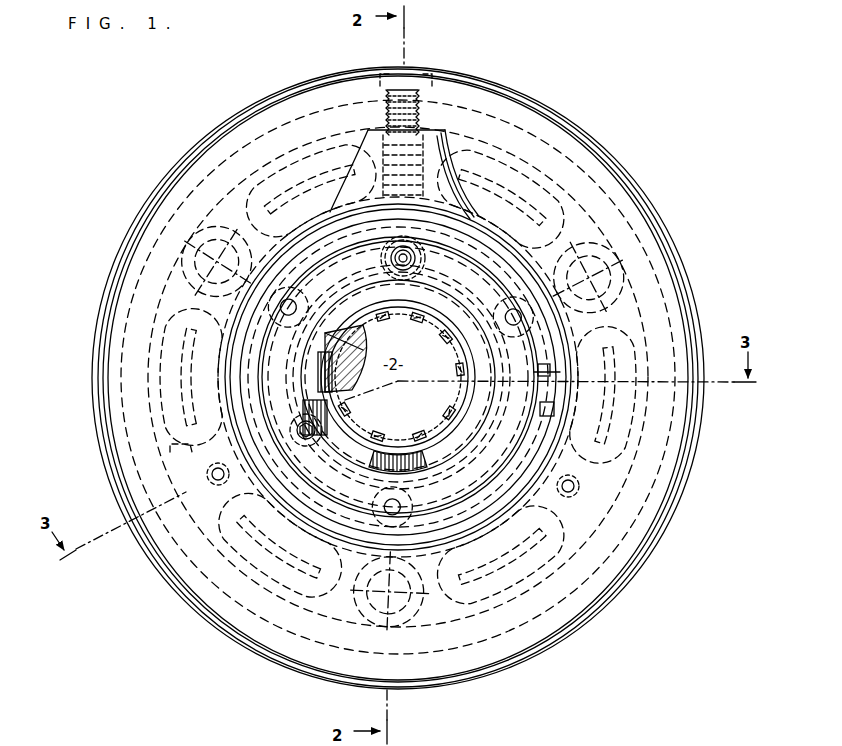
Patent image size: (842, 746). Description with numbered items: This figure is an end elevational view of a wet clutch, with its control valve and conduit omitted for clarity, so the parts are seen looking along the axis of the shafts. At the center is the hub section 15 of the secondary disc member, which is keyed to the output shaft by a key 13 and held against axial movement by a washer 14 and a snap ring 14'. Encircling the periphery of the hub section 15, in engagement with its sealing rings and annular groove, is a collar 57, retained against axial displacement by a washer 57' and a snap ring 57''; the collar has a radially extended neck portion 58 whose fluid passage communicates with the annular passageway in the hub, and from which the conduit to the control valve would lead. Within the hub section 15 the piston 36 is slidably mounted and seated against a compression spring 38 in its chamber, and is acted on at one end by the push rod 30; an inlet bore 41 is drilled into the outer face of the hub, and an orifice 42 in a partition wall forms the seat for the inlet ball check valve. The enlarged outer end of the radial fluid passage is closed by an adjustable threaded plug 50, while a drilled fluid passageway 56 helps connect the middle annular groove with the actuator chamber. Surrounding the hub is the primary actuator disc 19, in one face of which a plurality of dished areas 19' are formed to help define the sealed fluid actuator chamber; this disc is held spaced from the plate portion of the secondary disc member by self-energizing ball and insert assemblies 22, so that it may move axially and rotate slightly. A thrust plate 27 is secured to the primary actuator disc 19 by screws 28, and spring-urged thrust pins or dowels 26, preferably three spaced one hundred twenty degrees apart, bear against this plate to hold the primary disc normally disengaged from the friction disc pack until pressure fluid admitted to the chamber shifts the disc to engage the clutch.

The key 13 is at (397, 426).
The washer 14 is at (319, 358).
The snap ring 14' is at (304, 366).
The hub section 15 is at (398, 377).
The primary actuator disc 19 is at (408, 378).
The dished areas 19' is at (414, 374).
The self-energizing ball and insert assemblies 22 is at (202, 248).
The thrust pins or dowels 26 is at (308, 296).
The thrust plate 27 is at (190, 446).
The screws 28 is at (216, 484).
The push rod 30 is at (425, 272).
The piston 36 is at (458, 291).
The compression spring 38 is at (358, 224).
The inlet bore 41 is at (398, 250).
The orifice 42 is at (386, 262).
The adjustable threaded plug 50 is at (420, 86).
The fluid passageway 56 is at (308, 446).
The collar 57 is at (560, 285).
The washer 57' is at (573, 413).
The snap ring 57'' is at (604, 359).
The neck portion 58 is at (462, 182).